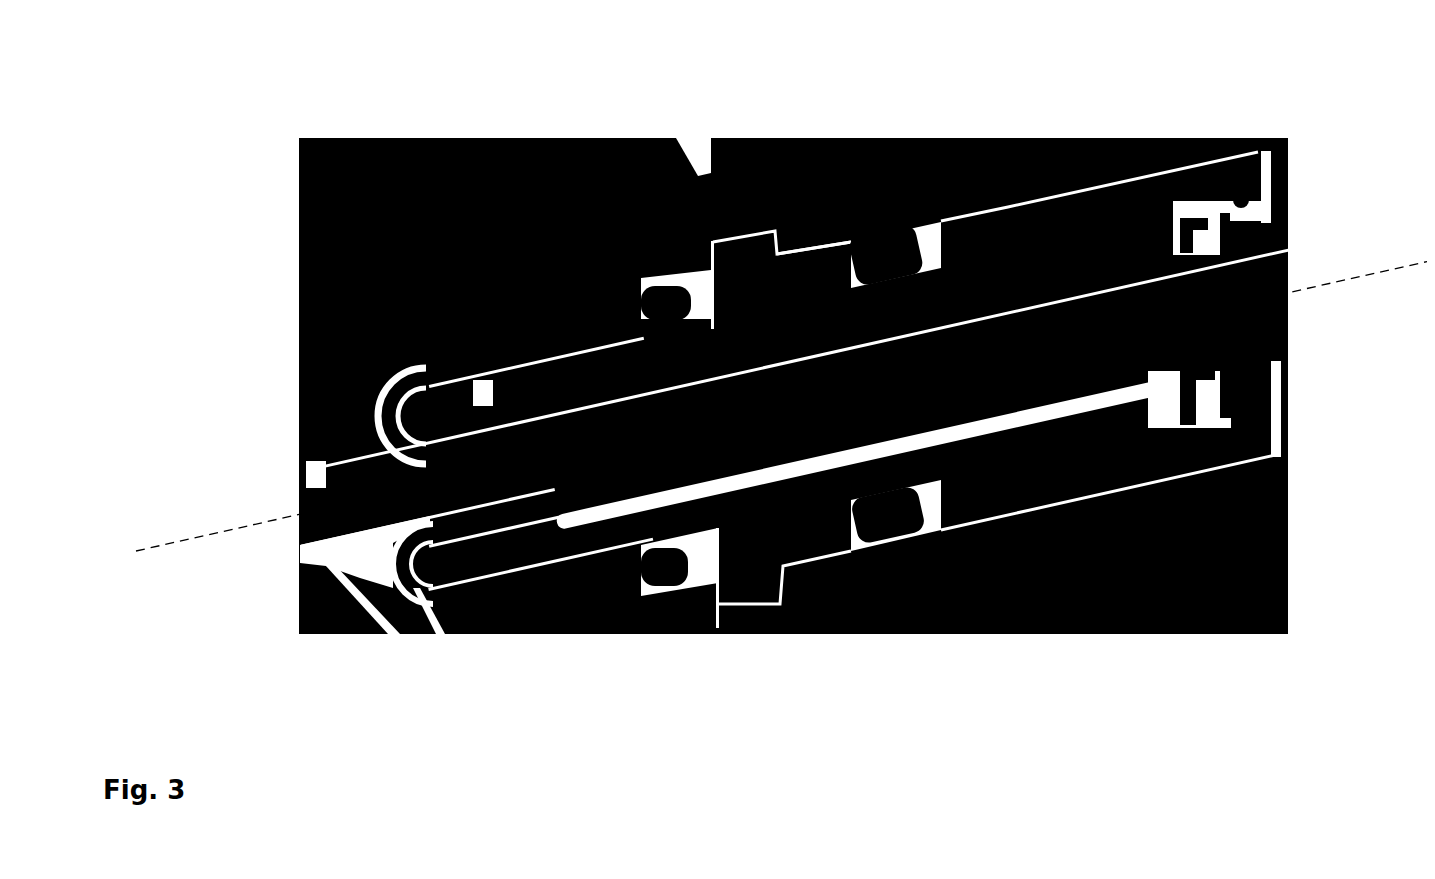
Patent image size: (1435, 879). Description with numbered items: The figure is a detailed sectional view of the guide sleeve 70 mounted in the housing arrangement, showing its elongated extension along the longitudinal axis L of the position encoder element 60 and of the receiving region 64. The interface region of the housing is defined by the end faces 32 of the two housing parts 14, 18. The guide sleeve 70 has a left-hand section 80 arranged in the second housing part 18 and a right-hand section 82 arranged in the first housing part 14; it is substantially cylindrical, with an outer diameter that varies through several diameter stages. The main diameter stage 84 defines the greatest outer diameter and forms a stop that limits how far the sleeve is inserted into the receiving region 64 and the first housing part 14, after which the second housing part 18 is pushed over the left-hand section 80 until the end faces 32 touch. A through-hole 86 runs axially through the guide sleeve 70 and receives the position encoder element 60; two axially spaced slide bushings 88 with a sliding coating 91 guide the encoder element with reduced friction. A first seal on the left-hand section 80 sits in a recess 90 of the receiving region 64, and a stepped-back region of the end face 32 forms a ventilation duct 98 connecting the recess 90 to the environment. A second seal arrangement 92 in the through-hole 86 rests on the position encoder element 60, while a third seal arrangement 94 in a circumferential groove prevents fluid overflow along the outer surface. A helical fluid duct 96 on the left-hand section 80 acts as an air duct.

The first housing part 14 is at (773, 160).
The second housing part 18 is at (518, 160).
The end faces 32 is at (690, 158).
The position encoder element 60 is at (343, 528).
The receiving region 64 is at (343, 418).
The guide sleeve 70 is at (732, 510).
The left-hand section 80 is at (527, 552).
The right-hand section 82 is at (1137, 453).
The main diameter stage 84 is at (762, 582).
The through-hole 86 is at (813, 455).
The slide bushings 88 is at (408, 412).
The recess 90 is at (685, 280).
The sliding coating 91 is at (488, 410).
The second seal arrangement 92 is at (1182, 214).
The third seal arrangement 94 is at (882, 250).
The fluid duct 96 is at (427, 412).
The ventilation duct 98 is at (685, 568).
The longitudinal axis L is at (781, 404).